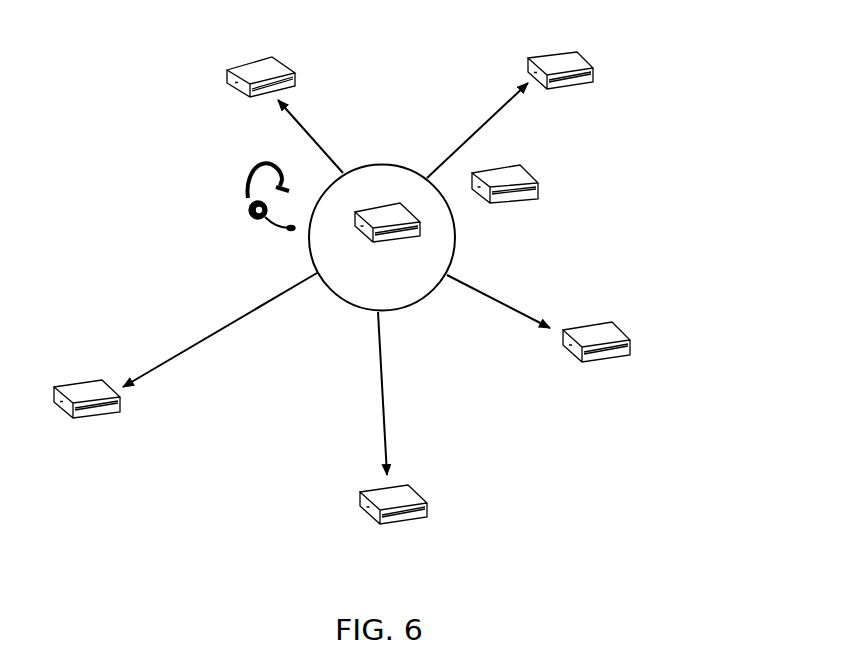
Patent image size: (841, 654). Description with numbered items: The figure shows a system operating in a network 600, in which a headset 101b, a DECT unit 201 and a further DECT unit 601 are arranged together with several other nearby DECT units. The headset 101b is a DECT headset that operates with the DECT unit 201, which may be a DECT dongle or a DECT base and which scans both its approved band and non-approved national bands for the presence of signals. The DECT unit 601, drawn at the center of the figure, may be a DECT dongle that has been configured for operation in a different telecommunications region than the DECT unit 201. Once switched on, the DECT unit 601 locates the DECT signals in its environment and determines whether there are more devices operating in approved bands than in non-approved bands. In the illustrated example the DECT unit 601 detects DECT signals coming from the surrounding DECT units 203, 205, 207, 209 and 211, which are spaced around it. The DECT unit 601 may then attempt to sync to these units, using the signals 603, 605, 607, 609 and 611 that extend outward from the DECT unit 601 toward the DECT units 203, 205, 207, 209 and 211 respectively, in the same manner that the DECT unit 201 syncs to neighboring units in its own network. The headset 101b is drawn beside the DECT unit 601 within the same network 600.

The network 600 is at (102, 21).
The DECT unit 601 is at (407, 283).
The headset 101b is at (233, 198).
The DECT unit 201 is at (548, 230).
The DECT unit 203 is at (307, 21).
The DECT unit 205 is at (637, 140).
The DECT unit 207 is at (602, 405).
The DECT unit 209 is at (483, 561).
The DECT unit 211 is at (167, 480).
The signal 603 is at (325, 145).
The signal 605 is at (463, 138).
The signal 607 is at (478, 285).
The signal 609 is at (384, 373).
The signal 611 is at (239, 313).